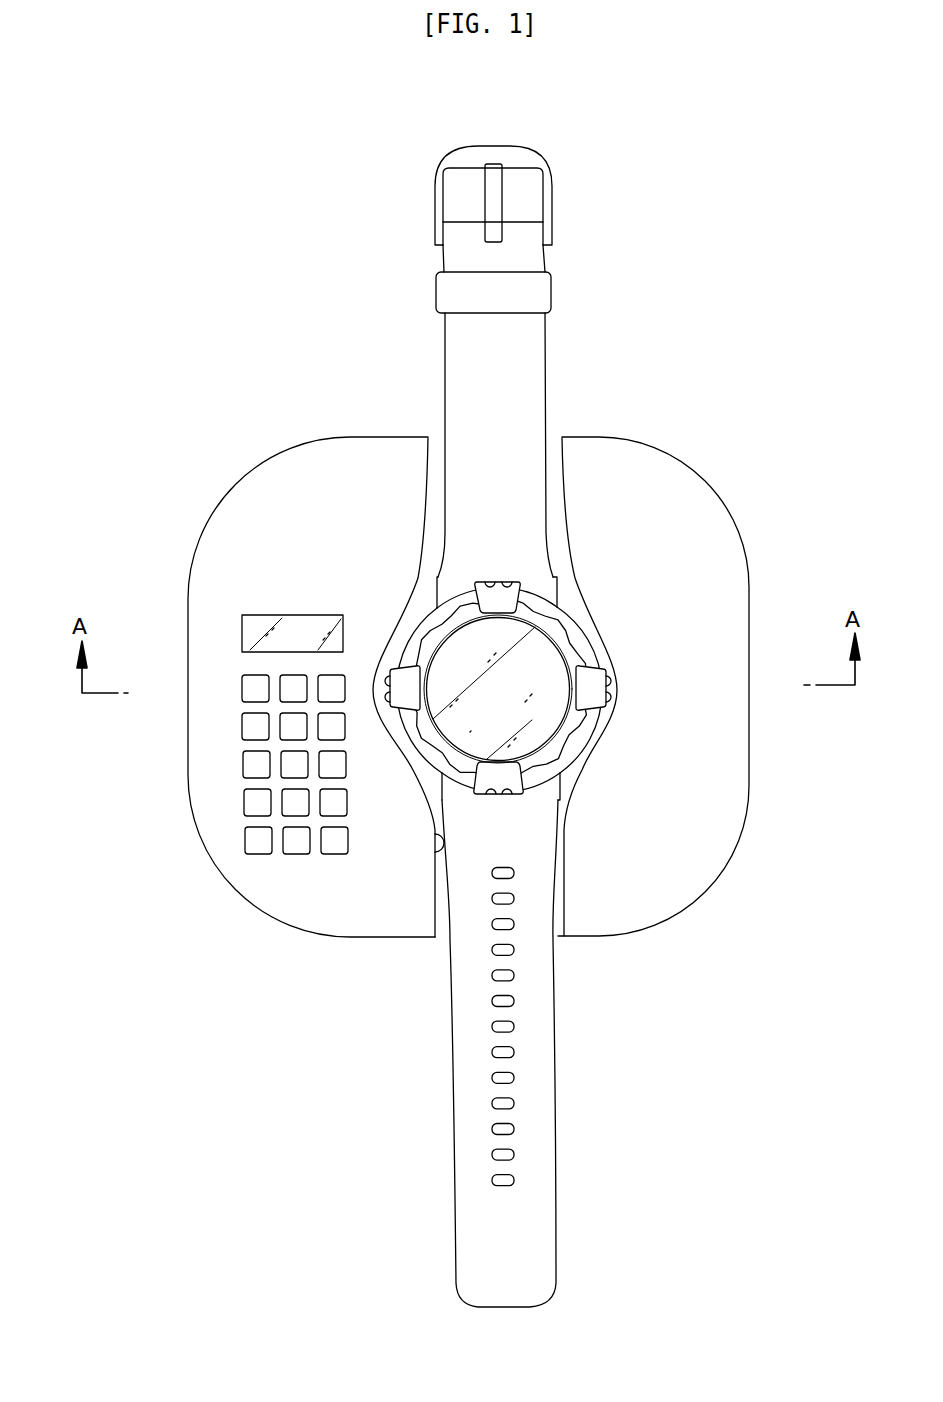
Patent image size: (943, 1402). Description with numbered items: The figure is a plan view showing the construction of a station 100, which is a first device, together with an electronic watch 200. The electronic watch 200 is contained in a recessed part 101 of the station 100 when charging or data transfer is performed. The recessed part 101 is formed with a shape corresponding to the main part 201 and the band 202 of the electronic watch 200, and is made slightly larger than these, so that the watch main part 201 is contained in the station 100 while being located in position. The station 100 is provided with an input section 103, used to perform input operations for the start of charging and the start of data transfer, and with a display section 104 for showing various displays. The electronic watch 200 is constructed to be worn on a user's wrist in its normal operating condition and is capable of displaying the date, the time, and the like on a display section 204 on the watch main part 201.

The station 100 is at (236, 916).
The recessed part 101 is at (432, 851).
The input section 103 is at (238, 843).
The display section 104 is at (300, 622).
The electronic watch 200 is at (538, 726).
The main part 201 is at (558, 747).
The band 202 is at (523, 386).
The watch display/dial 204 is at (552, 668).